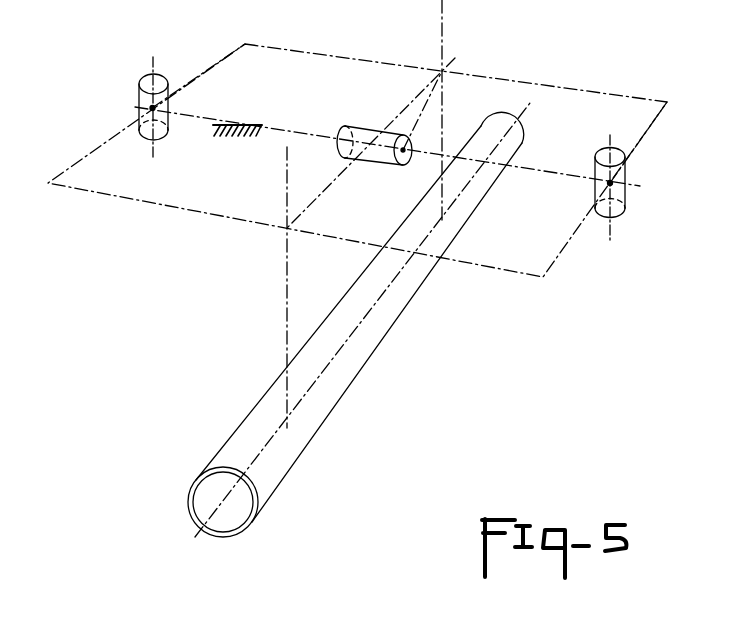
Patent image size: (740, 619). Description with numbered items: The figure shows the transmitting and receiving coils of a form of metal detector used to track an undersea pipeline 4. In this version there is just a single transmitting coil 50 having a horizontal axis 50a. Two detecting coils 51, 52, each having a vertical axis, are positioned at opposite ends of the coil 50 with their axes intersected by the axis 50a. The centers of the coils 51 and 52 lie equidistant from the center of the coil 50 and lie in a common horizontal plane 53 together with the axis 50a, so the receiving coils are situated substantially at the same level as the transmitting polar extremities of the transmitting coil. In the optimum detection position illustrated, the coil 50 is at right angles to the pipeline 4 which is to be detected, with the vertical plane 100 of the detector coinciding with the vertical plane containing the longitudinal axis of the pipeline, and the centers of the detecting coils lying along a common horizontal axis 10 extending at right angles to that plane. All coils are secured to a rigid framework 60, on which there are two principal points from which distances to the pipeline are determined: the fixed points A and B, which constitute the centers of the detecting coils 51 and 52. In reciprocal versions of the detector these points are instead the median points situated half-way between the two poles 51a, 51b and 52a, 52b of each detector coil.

The pipeline 4 is at (262, 410).
The horizontal axis 10 is at (235, 125).
The transmitting coil 50 is at (418, 125).
The axis of the transmitting coil 50a is at (413, 138).
The detecting coil 51 is at (138, 113).
The transmitting pole 51a is at (158, 141).
The transmitting pole 51b is at (141, 78).
The detecting coil 52 is at (627, 186).
The transmitting pole 52a is at (619, 218).
The transmitting pole 52b is at (619, 149).
The common plane 53 is at (352, 60).
The rigid framework 60 is at (243, 138).
The vertical plane 100 is at (443, 23).
The fixed point A is at (155, 109).
The fixed point B is at (612, 182).